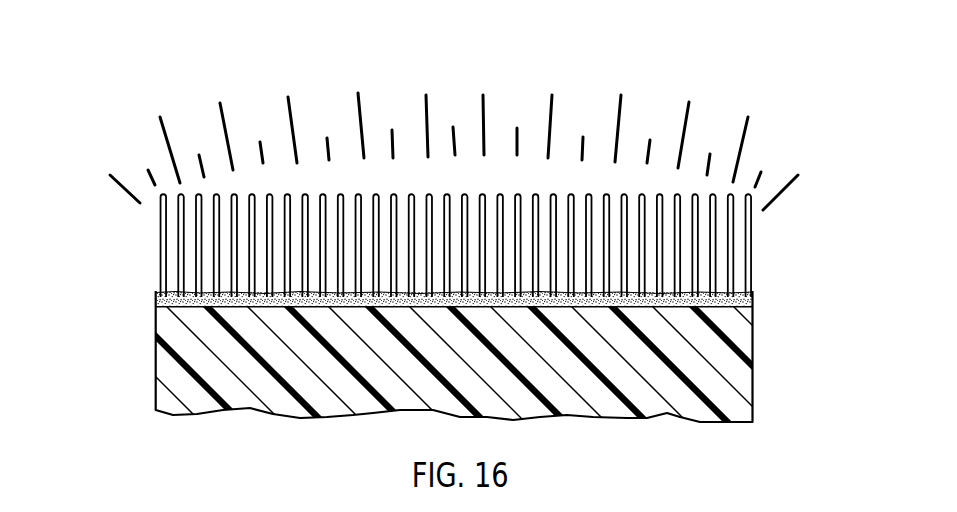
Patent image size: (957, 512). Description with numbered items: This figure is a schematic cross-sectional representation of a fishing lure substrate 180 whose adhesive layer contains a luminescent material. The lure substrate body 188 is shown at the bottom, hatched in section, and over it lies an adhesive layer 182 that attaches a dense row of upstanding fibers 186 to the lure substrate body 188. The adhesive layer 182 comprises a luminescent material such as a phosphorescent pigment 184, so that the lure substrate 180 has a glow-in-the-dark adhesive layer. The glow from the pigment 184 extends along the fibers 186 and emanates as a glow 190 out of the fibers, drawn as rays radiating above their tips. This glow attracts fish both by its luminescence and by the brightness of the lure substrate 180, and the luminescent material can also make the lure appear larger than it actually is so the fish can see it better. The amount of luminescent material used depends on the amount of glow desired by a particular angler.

The fishing lure substrate 180 is at (489, 266).
The adhesive layer 182 is at (753, 292).
The phosphorescent pigment 184 is at (753, 302).
The fibers 186 is at (765, 224).
The lure substrate body 188 is at (717, 388).
The glow 190 is at (552, 118).